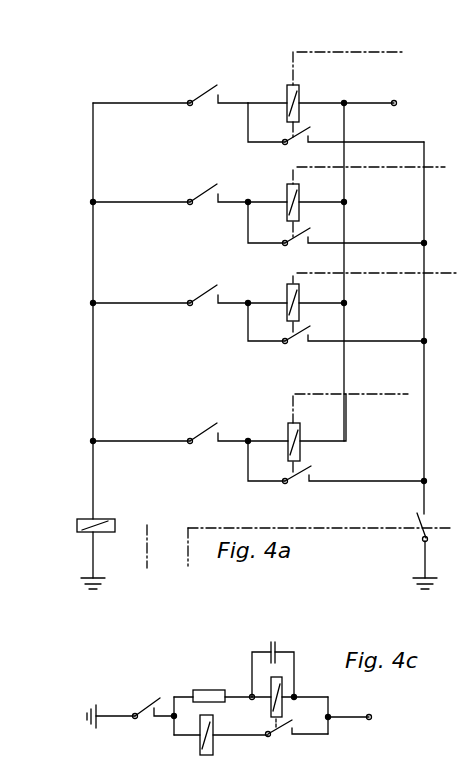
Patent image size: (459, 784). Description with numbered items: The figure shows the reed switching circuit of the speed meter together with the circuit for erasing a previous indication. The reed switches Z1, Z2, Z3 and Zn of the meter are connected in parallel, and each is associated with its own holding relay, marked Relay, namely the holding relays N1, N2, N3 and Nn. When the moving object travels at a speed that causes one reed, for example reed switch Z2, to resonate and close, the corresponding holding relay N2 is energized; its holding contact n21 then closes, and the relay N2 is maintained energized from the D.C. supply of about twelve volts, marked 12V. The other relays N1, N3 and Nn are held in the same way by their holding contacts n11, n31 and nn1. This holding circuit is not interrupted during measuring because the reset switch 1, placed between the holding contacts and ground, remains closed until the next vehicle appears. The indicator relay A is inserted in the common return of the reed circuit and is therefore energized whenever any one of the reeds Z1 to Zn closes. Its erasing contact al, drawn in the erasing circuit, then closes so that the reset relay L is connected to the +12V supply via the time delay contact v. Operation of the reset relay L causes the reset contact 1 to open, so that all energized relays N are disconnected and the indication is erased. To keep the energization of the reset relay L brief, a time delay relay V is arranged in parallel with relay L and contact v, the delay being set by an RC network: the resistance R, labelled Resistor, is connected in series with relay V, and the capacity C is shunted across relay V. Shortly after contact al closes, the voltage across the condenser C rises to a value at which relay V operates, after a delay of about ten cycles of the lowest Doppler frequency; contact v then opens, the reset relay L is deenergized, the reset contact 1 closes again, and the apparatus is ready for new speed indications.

In FIG. 4A, the reed switch Z1 is at (170, 86).
In FIG. 4A, the reed switch Z2 is at (170, 185).
In FIG. 4A, the reed switch Z3 is at (170, 286).
In FIG. 4A, the reed switch Zn is at (170, 424).
In FIG. 4A, the holding relay N1 is at (297, 98).
In FIG. 4A, the holding relay N2 is at (296, 197).
In FIG. 4A, the holding relay N3 is at (296, 297).
In FIG. 4A, the holding relay Nn is at (296, 427).
In FIG. 4A, the holding contact n11 is at (336, 135).
In FIG. 4A, the holding contact n21 is at (337, 235).
In FIG. 4A, the holding contact n31 is at (337, 335).
In FIG. 4A, the holding contact nn1 is at (337, 474).
In FIG. 4A, the indicator relay A is at (147, 525).
In FIG. 4A, the reset switch 1 is at (427, 551).
In FIG. 4A, the relay Relay is at (287, 91).
In FIG. 4A, the D.C. voltage of 12 volts 12V is at (398, 104).
In FIG. 4C, the D.C. voltage of 12 volts 12V is at (377, 718).
In FIG. 4C, the resistor Resistor is at (205, 762).
In FIG. 4C, the resistance R is at (213, 685).
In FIG. 4C, the reset relay L is at (221, 739).
In FIG. 4C, the capacity C is at (273, 660).
In FIG. 4C, the time delay relay V is at (284, 690).
In FIG. 4C, the time delay contact v is at (297, 737).
In FIG. 4C, the erasing contact al is at (154, 721).